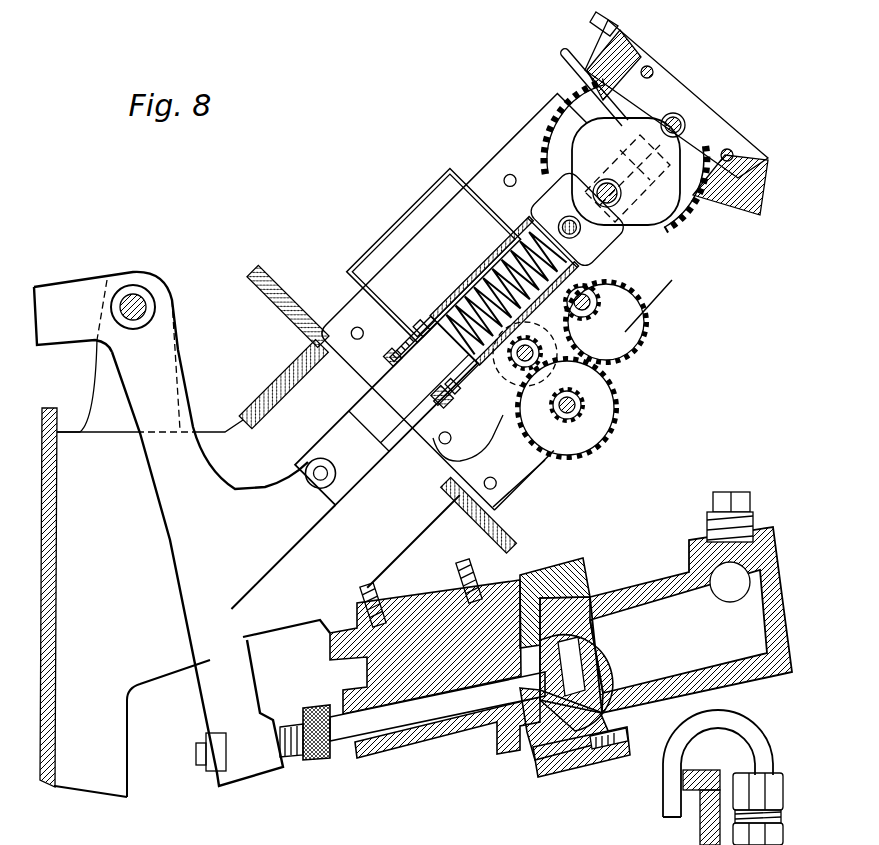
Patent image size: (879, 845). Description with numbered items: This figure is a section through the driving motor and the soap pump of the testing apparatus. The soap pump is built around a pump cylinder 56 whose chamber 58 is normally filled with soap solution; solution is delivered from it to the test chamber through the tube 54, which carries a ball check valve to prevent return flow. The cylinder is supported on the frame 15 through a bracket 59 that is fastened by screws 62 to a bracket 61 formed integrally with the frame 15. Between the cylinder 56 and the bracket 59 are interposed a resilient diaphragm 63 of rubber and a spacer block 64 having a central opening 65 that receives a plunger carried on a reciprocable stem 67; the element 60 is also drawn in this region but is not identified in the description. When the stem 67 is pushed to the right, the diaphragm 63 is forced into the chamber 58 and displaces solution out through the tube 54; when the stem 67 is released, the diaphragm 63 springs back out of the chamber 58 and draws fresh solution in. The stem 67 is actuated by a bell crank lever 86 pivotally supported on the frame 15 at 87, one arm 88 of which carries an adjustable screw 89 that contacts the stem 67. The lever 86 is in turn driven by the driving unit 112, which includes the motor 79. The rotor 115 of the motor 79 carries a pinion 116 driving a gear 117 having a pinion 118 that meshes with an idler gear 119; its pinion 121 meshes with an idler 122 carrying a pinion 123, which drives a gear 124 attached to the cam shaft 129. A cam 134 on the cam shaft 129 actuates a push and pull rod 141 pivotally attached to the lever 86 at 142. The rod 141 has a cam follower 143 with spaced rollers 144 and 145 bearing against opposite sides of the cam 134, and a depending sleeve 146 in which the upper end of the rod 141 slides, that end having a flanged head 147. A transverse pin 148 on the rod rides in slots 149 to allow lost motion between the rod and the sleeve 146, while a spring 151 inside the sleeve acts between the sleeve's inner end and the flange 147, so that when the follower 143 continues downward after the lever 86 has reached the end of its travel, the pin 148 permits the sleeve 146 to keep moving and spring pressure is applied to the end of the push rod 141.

The frame 15 is at (49, 780).
The tube 54 is at (742, 738).
The pump cylinder 56 is at (645, 586).
The chamber 58 is at (676, 641).
The bracket 59 is at (490, 716).
The ball joint 60 is at (575, 668).
The bracket 61 is at (345, 552).
The screws 62 is at (458, 584).
The resilient diaphragm 63 is at (553, 572).
The spacer block 64 is at (586, 766).
The central opening 65 is at (526, 742).
The reciprocable stem 67 is at (430, 742).
The motor 79 is at (437, 206).
The lever 86 is at (70, 286).
The pivotal support 87 is at (141, 296).
The arm 88 is at (222, 686).
The adjustable screw 89 is at (301, 748).
The driving unit 112 is at (390, 178).
The rotor 115 is at (498, 414).
The pinion 116 is at (504, 378).
The gear 117 is at (616, 394).
The pinion 118 is at (562, 424).
The idler gear 119 is at (511, 394).
The pinion 121 is at (566, 332).
The idler 122 is at (647, 320).
The pinion 123 is at (600, 302).
The gear 124 is at (680, 250).
The cam shaft 129 is at (613, 206).
The cam 134 is at (586, 140).
The push and pull rod 141 is at (383, 432).
The pivotal attachment 142 is at (314, 470).
The cam follower 143 is at (652, 98).
The roller 144 is at (690, 120).
The roller 145 is at (565, 216).
The depending sleeve 146 is at (478, 284).
The flanged head 147 is at (467, 306).
The transverse pin 148 is at (440, 378).
The slots 149 is at (420, 332).
The spring 151 is at (487, 268).